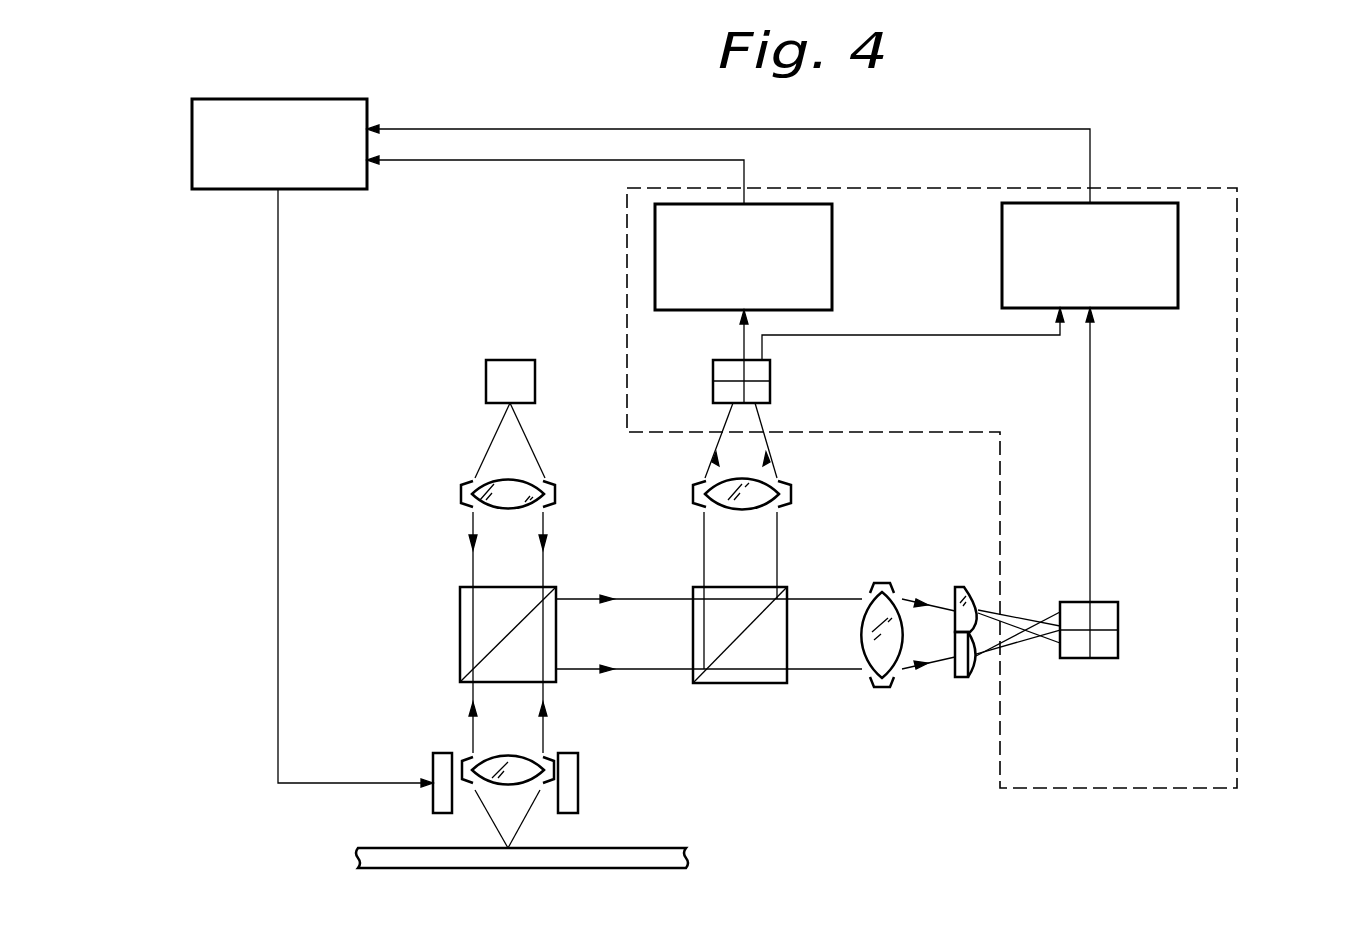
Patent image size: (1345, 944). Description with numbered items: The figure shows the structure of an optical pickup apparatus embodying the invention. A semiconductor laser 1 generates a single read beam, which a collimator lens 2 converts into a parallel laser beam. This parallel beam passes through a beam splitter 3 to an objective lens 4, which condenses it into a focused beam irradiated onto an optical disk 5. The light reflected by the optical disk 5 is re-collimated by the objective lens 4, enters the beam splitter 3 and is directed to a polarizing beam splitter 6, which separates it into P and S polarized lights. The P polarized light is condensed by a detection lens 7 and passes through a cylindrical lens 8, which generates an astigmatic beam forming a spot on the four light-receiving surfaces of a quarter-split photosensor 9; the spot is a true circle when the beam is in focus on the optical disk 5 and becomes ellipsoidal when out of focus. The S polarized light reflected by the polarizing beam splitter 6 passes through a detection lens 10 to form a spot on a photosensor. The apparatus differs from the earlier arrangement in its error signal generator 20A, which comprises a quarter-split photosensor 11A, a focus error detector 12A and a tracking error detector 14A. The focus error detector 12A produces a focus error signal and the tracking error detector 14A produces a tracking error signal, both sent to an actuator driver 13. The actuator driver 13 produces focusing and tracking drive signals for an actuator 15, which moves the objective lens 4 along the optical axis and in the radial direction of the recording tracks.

The semiconductor laser 1 is at (485, 375).
The collimator lens 2 is at (461, 492).
The beam splitter 3 is at (460, 610).
The objective lens 4 is at (462, 756).
The optical disk 5 is at (356, 849).
The polarizing beam splitter 6 is at (740, 683).
The detection lens 7 is at (884, 678).
The cylindrical lens 8 is at (958, 677).
The quarter-split photosensor 9 is at (1075, 658).
The detection lens 10 is at (791, 491).
The quarter-split photosensor 11A is at (770, 389).
The focus error detector 12A is at (1141, 309).
The actuator driver 13 is at (330, 190).
The tracking error detector 14A is at (832, 230).
The actuator 15 is at (432, 761).
The error signal generator 20A is at (1237, 422).